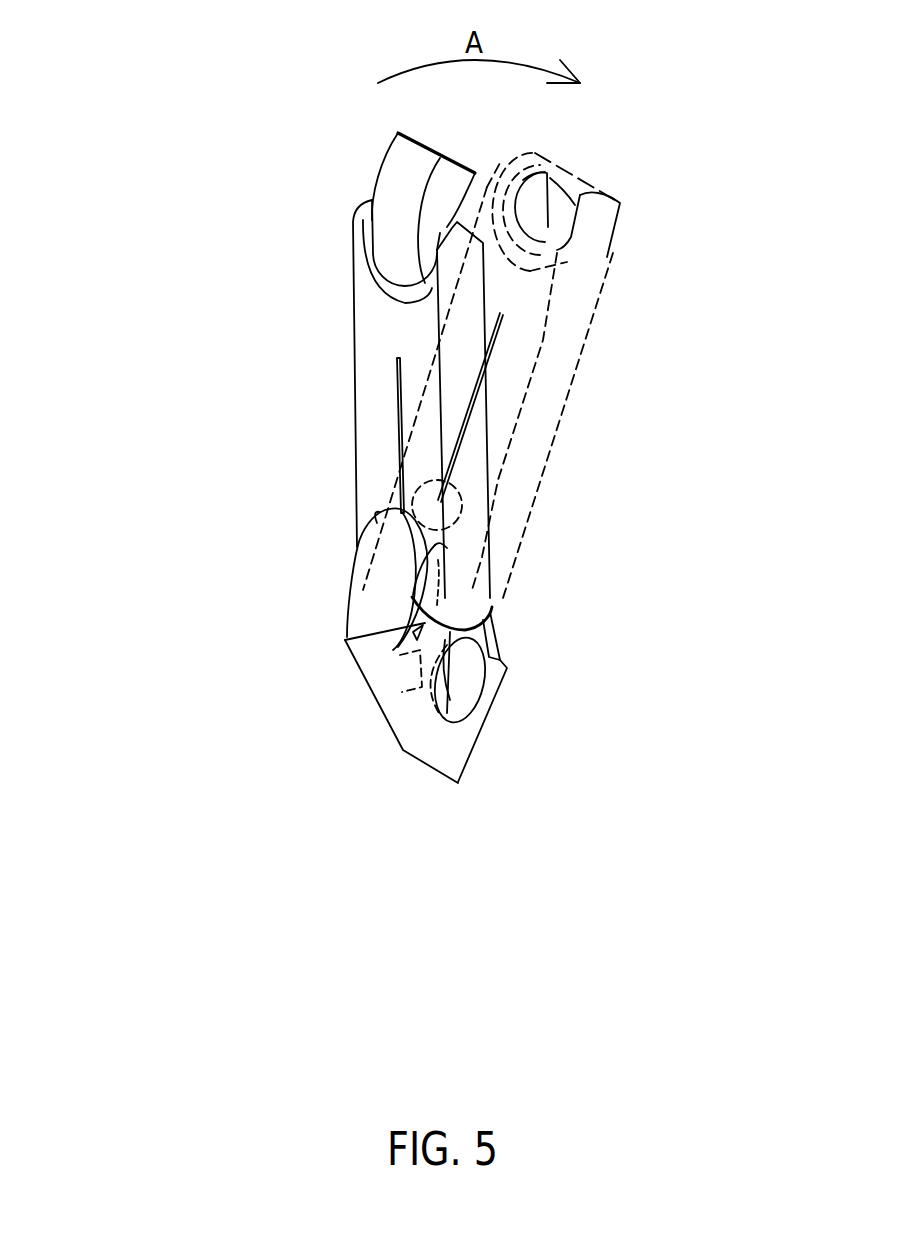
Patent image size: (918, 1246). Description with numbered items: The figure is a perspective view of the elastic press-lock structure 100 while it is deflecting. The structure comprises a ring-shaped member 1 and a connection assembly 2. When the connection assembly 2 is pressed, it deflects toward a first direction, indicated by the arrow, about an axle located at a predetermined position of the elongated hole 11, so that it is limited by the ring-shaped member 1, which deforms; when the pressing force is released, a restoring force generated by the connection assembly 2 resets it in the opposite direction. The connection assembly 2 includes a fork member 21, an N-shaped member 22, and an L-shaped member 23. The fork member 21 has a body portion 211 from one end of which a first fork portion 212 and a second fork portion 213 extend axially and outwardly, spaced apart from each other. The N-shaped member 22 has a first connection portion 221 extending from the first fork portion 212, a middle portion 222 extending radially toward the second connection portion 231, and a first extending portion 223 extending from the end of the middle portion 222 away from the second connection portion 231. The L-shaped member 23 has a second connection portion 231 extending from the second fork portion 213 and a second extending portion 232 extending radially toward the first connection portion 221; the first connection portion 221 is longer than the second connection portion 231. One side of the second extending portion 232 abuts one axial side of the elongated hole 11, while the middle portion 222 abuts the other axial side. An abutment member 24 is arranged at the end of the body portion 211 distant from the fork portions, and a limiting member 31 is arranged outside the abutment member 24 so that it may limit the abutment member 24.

The elastic press-lock structure 100 is at (633, 110).
The ring-shaped member 1 is at (378, 735).
The elongated hole 11 is at (347, 643).
The connection assembly 2 is at (628, 256).
The fork member 21 is at (508, 290).
The body portion 211 is at (397, 333).
The first fork portion 212 is at (378, 405).
The second fork portion 213 is at (418, 448).
The N-shaped member 22 is at (339, 547).
The first connection portion 221 is at (370, 527).
The middle portion 222 is at (435, 637).
The first extending portion 223 is at (433, 700).
The L-shaped member 23 is at (496, 619).
The second connection portion 231 is at (432, 568).
The second extending portion 232 is at (412, 598).
The abutment member 24 is at (407, 285).
The limiting member 31 is at (398, 250).